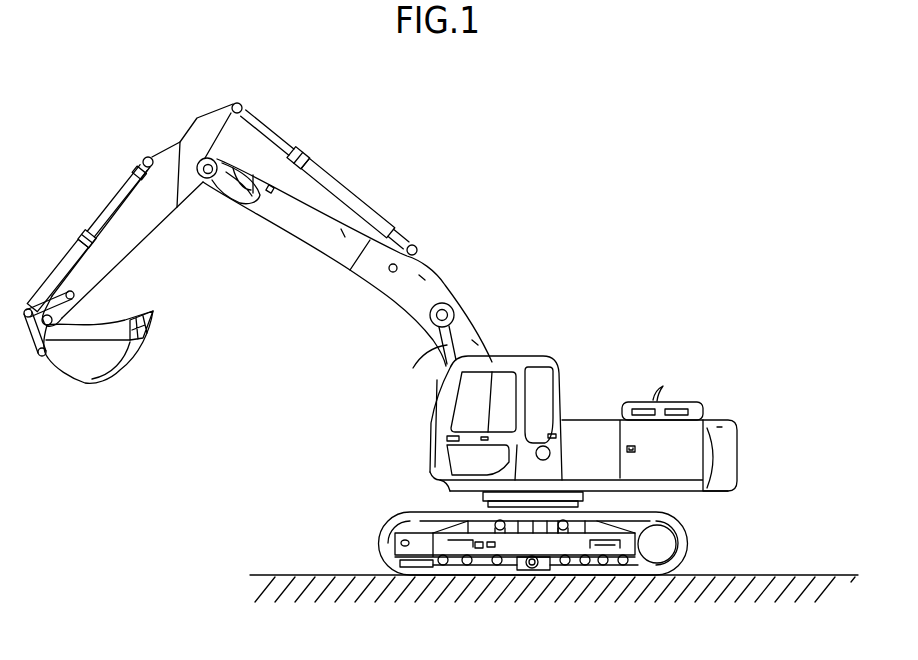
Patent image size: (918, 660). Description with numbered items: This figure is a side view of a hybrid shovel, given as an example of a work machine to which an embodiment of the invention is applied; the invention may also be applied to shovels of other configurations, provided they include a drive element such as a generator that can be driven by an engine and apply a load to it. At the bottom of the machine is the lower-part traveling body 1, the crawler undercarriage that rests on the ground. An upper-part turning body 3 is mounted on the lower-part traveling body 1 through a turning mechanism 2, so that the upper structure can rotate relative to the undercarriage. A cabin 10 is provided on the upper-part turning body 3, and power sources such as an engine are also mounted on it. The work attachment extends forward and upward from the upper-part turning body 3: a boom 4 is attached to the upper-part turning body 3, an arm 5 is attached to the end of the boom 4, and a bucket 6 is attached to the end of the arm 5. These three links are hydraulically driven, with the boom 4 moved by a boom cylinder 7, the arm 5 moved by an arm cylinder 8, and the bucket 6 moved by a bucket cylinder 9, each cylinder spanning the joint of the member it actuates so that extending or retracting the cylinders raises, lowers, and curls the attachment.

The lower-part traveling body 1 is at (383, 544).
The turning mechanism 2 is at (597, 507).
The upper-part turning body 3 is at (598, 420).
The boom 4 is at (377, 282).
The arm 5 is at (153, 220).
The bucket 6 is at (86, 378).
The boom cylinder 7 is at (450, 342).
The arm cylinder 8 is at (367, 208).
The bucket cylinder 9 is at (110, 208).
The cabin 10 is at (545, 355).